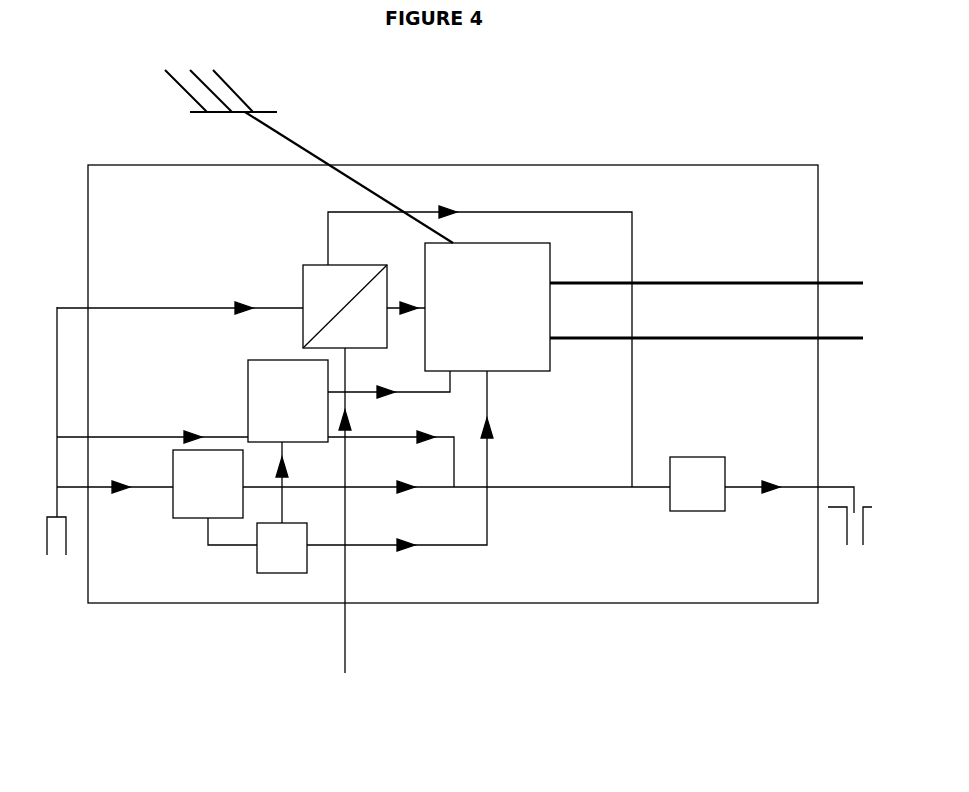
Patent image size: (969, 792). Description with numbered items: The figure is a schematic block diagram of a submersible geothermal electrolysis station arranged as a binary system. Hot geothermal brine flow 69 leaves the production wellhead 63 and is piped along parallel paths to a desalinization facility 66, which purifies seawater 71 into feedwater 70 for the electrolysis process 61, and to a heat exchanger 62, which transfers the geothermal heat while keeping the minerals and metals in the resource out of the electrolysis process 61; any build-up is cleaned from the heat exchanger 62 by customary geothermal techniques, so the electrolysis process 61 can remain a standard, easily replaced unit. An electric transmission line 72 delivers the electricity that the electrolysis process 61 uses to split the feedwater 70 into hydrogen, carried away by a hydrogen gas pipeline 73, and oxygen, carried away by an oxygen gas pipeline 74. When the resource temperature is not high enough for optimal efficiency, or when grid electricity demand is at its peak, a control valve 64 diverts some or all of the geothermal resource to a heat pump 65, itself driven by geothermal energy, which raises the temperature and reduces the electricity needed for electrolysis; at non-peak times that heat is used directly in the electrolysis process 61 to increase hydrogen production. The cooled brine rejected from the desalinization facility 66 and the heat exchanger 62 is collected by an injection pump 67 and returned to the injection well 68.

The electrolysis process 61 is at (487, 307).
The heat exchanger 62 is at (421, 497).
The production wellhead 63 is at (57, 448).
The control valve 64 is at (375, 472).
The heat pump 65 is at (349, 401).
The desalinization facility 66 is at (345, 306).
The injection pump 67 is at (762, 485).
The injection well 68 is at (850, 542).
The geothermal brine flow 69 is at (344, 339).
The feedwater 70 is at (406, 296).
The seawater 71 is at (357, 510).
The electric transmission line 72 is at (309, 156).
The hydrogen gas pipeline 73 is at (706, 271).
The oxygen gas pipeline 74 is at (706, 352).